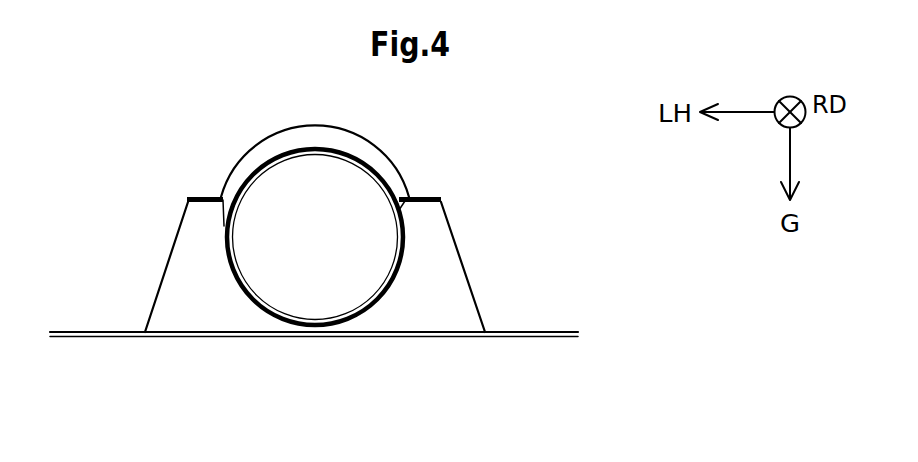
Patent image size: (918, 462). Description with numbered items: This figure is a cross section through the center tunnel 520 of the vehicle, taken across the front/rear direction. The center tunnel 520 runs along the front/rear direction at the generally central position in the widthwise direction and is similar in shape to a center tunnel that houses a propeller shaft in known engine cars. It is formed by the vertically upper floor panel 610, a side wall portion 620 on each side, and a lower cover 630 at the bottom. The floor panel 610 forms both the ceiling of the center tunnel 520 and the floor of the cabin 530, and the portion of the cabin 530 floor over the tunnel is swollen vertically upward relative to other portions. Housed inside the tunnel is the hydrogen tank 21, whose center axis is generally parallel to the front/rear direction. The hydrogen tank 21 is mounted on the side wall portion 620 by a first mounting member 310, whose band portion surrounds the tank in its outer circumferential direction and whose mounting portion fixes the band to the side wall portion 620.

The hydrogen tank 21 is at (327, 256).
The first mounting member 310 is at (227, 223).
The center tunnel 520 is at (227, 302).
The cabin 530 is at (338, 117).
The floor panel 610 is at (381, 147).
The side wall portion 620 is at (446, 212).
The lower cover 630 is at (158, 338).